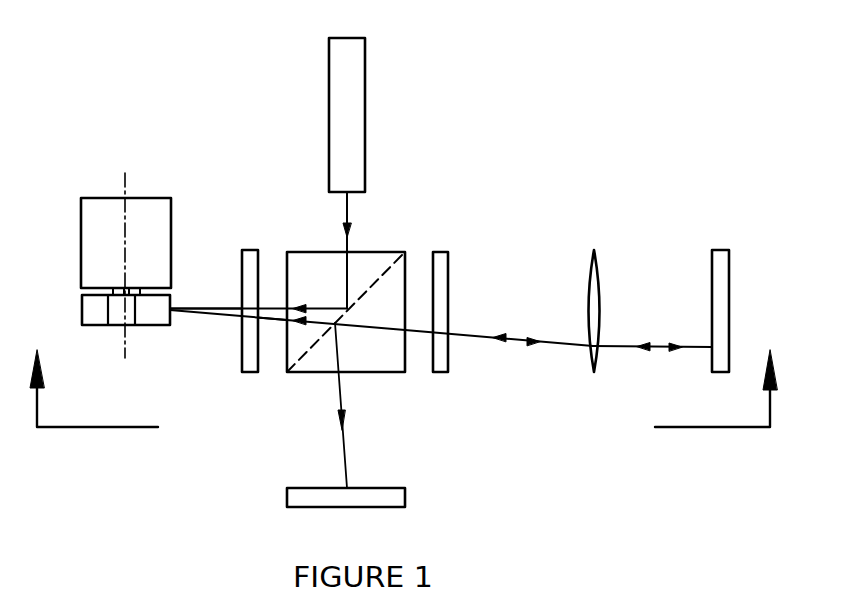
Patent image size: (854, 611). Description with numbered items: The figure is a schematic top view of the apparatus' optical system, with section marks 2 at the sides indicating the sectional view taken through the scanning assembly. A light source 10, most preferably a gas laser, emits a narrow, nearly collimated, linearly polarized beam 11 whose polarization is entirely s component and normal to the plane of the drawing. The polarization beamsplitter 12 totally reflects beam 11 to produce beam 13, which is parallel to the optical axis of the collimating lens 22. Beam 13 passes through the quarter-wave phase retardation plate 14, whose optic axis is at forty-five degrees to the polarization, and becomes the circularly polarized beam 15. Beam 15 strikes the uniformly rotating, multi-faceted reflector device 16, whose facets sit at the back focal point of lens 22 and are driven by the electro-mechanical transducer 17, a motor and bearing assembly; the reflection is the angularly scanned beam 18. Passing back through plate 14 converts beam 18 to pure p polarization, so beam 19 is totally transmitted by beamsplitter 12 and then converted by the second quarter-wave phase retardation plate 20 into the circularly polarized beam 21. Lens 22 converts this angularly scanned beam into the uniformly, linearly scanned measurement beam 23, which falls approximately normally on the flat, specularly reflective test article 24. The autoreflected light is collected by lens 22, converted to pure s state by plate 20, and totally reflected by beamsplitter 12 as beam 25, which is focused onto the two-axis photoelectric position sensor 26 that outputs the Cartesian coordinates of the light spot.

The section line of FIG. 2 is at (402, 373).
The light source 10 is at (365, 112).
The linearly polarized beam 11 is at (347, 220).
The polarization beamsplitter 12 is at (390, 252).
The beam 13 is at (268, 308).
The quarter-wave phase retardation plate 14 is at (242, 250).
The circularly polarized beam 15 is at (203, 308).
The multi-faceted reflector device 16 is at (99, 327).
The electro-mechanical transducer 17 is at (81, 238).
The angularly scanned beam 18 is at (192, 313).
The beam 19 is at (268, 318).
The second quarter-wave phase retardation plate 20 is at (431, 372).
The circularly polarized beam 21 is at (505, 340).
The collimating lens 22 is at (588, 366).
The measurement beam 23 is at (651, 349).
The test article 24 is at (712, 263).
The beam 25 is at (342, 420).
The two-axis photoelectric position sensor 26 is at (405, 493).